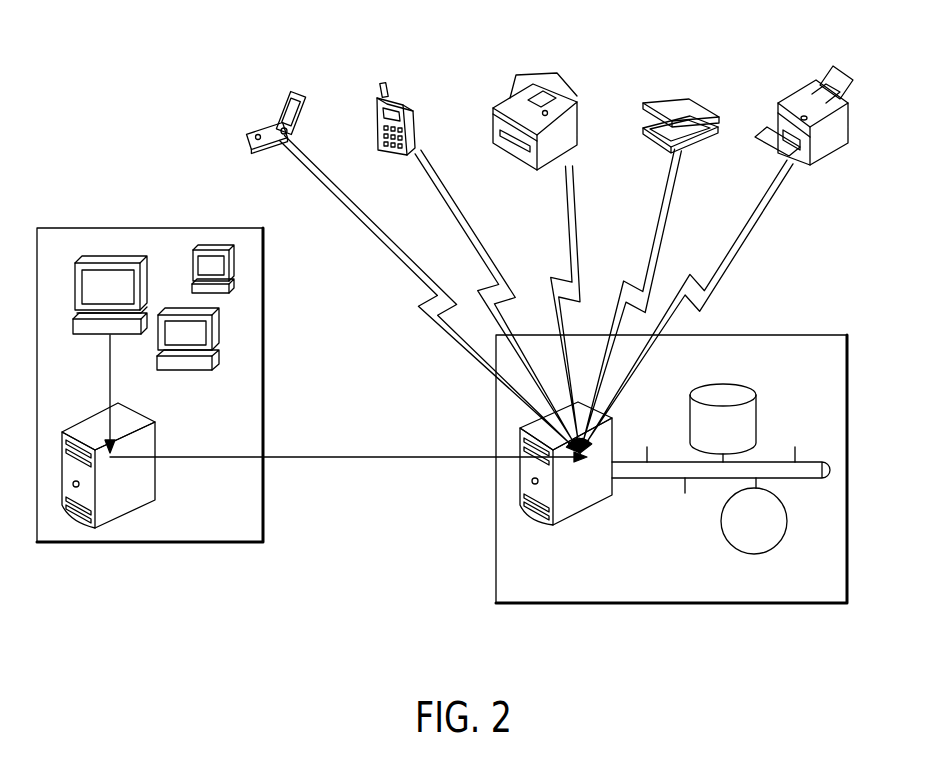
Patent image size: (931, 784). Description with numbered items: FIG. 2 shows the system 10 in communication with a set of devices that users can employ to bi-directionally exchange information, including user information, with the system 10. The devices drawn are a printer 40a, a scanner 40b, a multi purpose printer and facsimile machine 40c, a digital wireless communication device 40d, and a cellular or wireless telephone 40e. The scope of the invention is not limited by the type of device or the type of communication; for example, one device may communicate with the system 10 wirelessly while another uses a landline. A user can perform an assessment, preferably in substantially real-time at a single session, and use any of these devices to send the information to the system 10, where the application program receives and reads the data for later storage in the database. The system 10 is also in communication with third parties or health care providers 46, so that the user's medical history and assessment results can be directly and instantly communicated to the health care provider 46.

The system 10 is at (622, 603).
The health care providers 46 is at (140, 542).
The printer 40a is at (797, 82).
The scanner 40b is at (672, 97).
The multi purpose printer and facsimile machine 40c is at (542, 68).
The digital wireless communication device 40d is at (403, 98).
The cellular or wireless telephone 40e is at (287, 93).